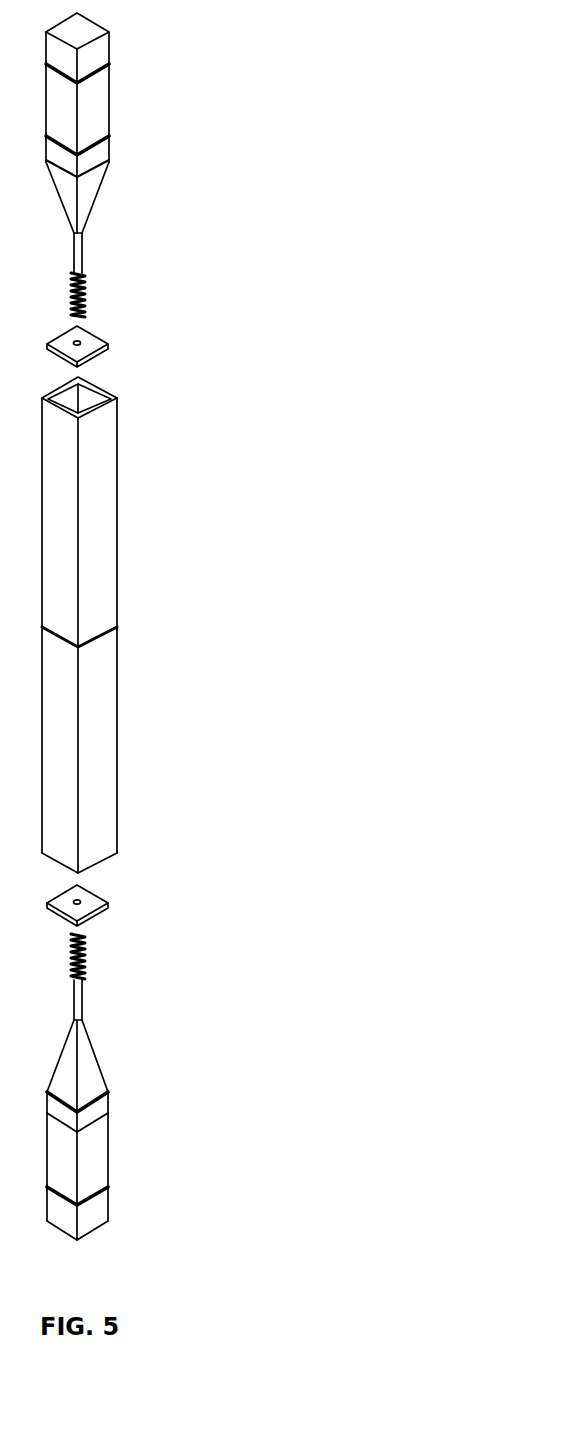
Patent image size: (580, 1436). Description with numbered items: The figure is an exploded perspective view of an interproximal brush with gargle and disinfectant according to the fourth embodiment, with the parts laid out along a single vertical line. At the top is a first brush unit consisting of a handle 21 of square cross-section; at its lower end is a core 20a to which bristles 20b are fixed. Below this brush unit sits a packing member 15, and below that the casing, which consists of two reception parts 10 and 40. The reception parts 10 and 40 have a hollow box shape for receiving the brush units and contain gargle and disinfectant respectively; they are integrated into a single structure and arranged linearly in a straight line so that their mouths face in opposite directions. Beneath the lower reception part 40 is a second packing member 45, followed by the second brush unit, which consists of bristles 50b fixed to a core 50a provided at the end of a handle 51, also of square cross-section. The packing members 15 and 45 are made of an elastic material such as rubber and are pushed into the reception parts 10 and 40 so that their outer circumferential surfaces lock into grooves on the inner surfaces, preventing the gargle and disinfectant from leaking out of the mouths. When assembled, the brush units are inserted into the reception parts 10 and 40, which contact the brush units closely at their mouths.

The handle 21 is at (92, 120).
The core 20a is at (83, 273).
The bristles 20b is at (85, 298).
The packing member 15 is at (97, 345).
The reception part 10 is at (98, 518).
The reception part 40 is at (102, 735).
The packing member 45 is at (92, 898).
The bristles 50b is at (85, 952).
The core 50a is at (83, 979).
The handle 51 is at (92, 1157).